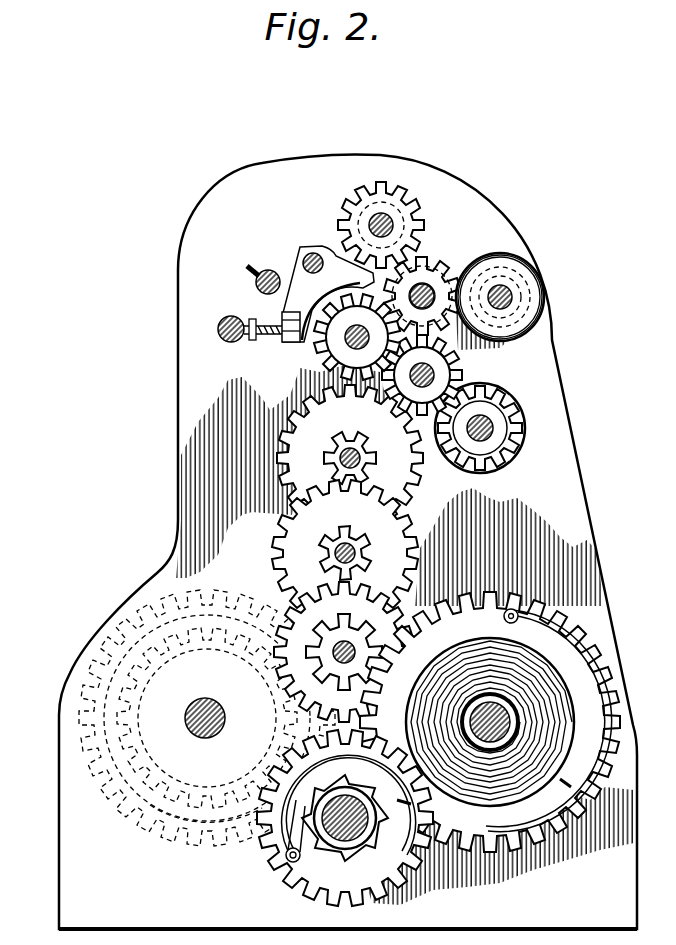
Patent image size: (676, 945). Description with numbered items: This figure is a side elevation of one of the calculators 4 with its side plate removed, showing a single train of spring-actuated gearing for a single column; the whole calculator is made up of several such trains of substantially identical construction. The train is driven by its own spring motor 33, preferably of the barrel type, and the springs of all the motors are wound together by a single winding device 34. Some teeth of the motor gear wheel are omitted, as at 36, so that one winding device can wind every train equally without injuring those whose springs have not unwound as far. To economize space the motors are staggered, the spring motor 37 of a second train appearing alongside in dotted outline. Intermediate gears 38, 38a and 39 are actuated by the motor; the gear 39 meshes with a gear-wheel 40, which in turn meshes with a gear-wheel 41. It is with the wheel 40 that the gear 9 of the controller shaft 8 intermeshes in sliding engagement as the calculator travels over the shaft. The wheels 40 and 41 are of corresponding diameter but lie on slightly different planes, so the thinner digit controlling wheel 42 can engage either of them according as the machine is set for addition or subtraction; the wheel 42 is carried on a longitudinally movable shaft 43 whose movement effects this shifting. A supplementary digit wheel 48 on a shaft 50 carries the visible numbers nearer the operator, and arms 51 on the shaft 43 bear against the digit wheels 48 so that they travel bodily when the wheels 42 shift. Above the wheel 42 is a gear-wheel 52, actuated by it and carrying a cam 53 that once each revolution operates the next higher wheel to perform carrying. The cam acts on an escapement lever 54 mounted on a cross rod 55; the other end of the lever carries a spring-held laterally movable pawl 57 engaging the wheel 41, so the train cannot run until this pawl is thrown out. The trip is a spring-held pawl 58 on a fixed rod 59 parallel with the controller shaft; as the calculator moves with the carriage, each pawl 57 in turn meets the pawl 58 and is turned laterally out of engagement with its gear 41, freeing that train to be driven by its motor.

The calculator 4 is at (348, 541).
The controller shaft 8 is at (483, 426).
The controller shaft gear 9 is at (549, 595).
The spring motor 33 is at (470, 652).
The winding device 34 is at (328, 856).
The omitted teeth of motor gear wheel 36 is at (397, 742).
The spring motor of second train 37 is at (97, 712).
The intermediate gear 38 is at (290, 668).
The intermediate gear 38a is at (282, 564).
The intermediate gear 39 is at (366, 458).
The gear-wheel 40 is at (458, 388).
The gear-wheel 41 is at (325, 366).
The digit controlling wheel 42 is at (441, 270).
The longitudinally movable shaft 43 is at (425, 294).
The supplementary digit wheel 48 is at (530, 298).
The shaft 50 is at (504, 294).
The arm 51 is at (507, 257).
The gear-wheel 52 is at (405, 213).
The cam 53 is at (386, 222).
The escapement lever 54 is at (333, 262).
The cross rod 55 is at (308, 258).
The escapement pawl 57 is at (309, 276).
The trip pawl 58 is at (290, 335).
The fixed rod 59 is at (232, 316).